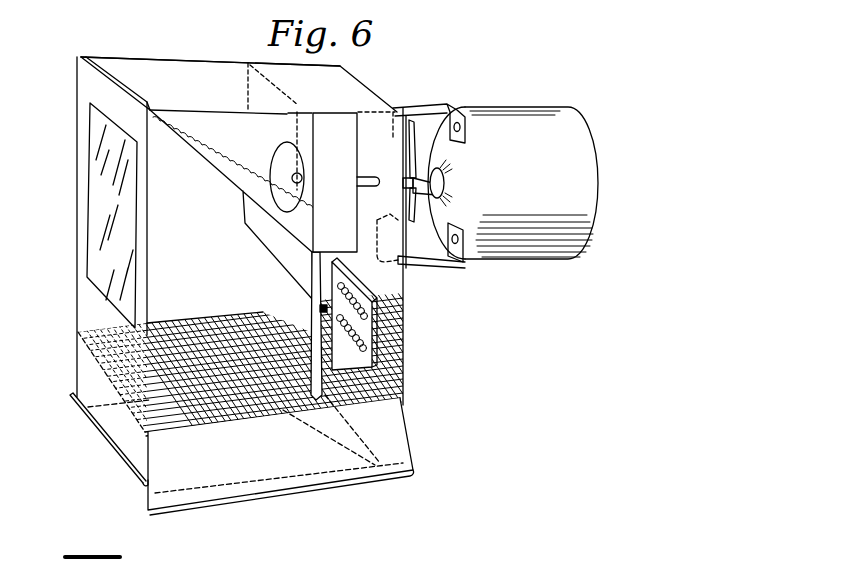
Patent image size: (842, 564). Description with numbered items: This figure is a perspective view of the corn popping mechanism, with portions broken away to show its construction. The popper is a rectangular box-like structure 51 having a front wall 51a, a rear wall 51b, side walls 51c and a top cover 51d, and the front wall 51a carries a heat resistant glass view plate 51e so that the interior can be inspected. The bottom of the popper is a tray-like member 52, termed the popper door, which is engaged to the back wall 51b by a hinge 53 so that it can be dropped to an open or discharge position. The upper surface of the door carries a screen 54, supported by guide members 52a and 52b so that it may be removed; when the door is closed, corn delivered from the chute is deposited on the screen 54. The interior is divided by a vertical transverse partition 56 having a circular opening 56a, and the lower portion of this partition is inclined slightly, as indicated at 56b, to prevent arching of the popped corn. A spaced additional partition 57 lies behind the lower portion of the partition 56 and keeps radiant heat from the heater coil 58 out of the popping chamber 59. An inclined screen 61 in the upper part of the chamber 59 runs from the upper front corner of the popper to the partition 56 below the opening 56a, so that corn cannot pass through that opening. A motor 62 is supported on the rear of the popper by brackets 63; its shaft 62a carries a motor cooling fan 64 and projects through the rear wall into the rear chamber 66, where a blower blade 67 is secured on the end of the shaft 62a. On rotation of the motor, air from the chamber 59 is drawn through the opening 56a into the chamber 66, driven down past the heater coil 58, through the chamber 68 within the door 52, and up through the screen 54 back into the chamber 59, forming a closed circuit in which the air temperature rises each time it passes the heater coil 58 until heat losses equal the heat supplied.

The rectangular box-like structure 51 is at (392, 322).
The front wall 51a is at (87, 313).
The rear wall 51b is at (397, 282).
The side walls 51c is at (158, 222).
The top cover 51d is at (185, 80).
The heat resistant glass view plate 51e is at (95, 273).
The tray-like member 52 is at (205, 470).
The guide member 52a is at (100, 350).
The guide member 52b is at (170, 435).
The hinge 53 is at (400, 403).
The screen 54 is at (282, 410).
The vertical transverse partition 56 is at (262, 124).
The circular opening 56a is at (332, 143).
The inclined lower portion of partition 56b is at (323, 393).
The additional partition 57 is at (318, 393).
The heater coil 58 is at (372, 352).
The popping chamber 59 is at (195, 205).
The inclined screen 61 is at (213, 165).
The motor 62 is at (508, 130).
The motor shaft 62a is at (432, 176).
The brackets 63 is at (452, 102).
The motor cooling fan 64 is at (452, 263).
The rear chamber 66 is at (382, 281).
The blower blade 67 is at (393, 112).
The chamber within door 68 is at (145, 490).